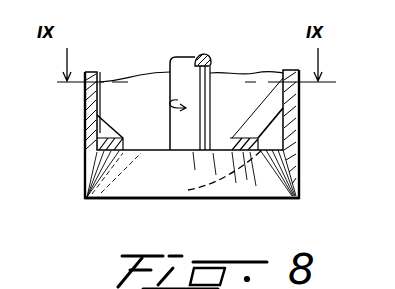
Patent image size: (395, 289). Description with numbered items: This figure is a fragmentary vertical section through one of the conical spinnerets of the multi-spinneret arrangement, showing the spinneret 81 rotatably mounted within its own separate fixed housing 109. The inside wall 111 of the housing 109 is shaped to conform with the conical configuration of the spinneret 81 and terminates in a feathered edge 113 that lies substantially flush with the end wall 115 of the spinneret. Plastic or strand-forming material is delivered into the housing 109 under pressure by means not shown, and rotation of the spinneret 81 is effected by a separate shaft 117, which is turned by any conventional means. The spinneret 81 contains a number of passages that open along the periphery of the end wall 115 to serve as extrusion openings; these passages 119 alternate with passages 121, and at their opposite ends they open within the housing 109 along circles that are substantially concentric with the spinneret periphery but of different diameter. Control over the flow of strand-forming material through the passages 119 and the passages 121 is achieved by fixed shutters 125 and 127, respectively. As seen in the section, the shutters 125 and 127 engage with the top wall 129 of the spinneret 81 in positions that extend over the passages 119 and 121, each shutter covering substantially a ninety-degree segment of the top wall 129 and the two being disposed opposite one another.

The spinneret 81 is at (116, 206).
The fixed housing 109 is at (85, 130).
The inside wall 111 is at (287, 157).
The feathered edge 113 is at (300, 195).
The end wall 115 is at (243, 198).
The shaft 117 is at (195, 75).
The passages 119 is at (211, 171).
The passages 121 is at (296, 134).
The fixed shutter 125 is at (233, 137).
The fixed shutter 127 is at (101, 80).
The top wall 129 is at (154, 137).